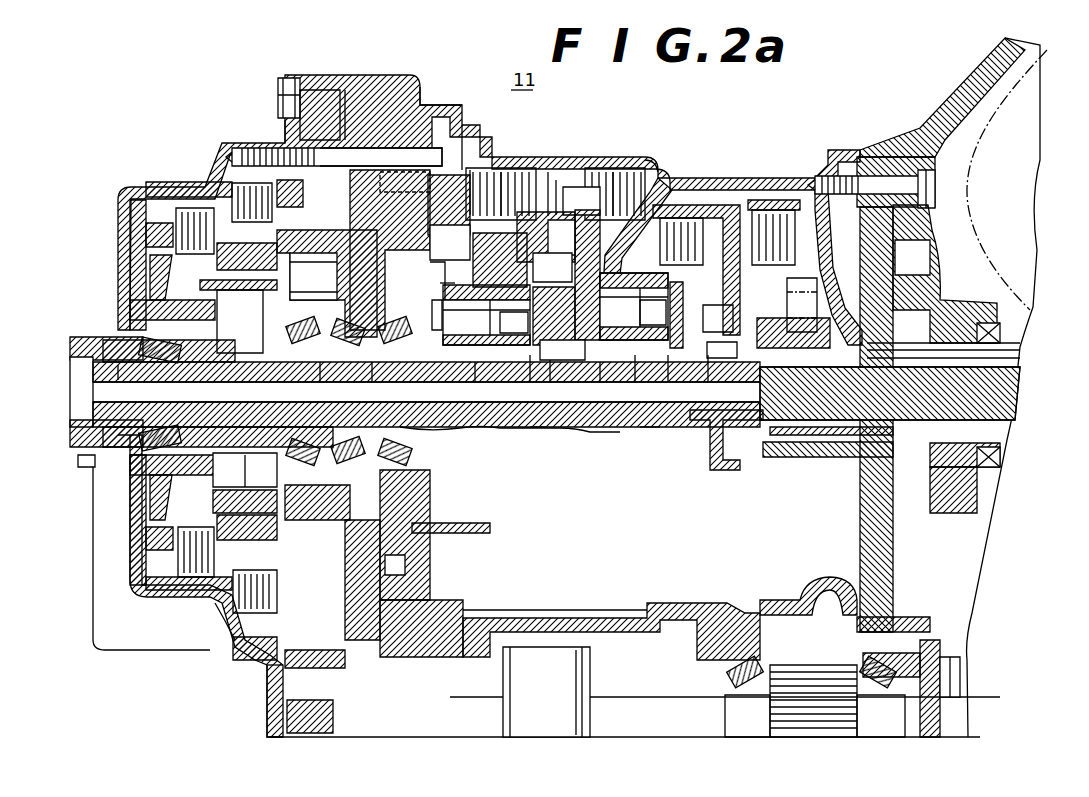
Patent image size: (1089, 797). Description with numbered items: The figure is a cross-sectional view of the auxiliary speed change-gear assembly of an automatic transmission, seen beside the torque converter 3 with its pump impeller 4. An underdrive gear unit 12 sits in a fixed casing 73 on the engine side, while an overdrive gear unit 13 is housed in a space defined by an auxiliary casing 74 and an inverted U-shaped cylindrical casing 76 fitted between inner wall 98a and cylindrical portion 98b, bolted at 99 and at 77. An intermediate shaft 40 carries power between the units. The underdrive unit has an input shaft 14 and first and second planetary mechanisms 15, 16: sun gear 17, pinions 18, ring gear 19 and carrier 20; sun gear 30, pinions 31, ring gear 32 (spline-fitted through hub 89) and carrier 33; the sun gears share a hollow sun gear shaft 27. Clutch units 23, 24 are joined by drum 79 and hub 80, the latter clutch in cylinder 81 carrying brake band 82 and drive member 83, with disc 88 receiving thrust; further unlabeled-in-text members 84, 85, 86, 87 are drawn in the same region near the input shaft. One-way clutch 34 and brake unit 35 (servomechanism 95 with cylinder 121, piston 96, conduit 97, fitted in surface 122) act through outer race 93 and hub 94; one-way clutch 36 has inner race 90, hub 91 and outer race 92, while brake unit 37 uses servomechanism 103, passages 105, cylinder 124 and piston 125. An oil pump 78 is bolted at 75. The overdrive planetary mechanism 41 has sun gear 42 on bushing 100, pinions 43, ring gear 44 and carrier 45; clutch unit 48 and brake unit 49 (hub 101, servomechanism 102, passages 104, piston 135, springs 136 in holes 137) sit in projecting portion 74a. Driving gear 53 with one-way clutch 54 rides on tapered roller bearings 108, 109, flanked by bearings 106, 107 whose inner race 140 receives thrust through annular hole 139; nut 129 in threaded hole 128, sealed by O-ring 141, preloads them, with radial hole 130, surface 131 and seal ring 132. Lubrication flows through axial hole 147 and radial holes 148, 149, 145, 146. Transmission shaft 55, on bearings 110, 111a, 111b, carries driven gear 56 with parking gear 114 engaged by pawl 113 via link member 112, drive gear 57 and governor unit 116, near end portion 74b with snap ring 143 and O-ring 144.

The torque converter 3 is at (943, 88).
The pump impeller 4 is at (1030, 145).
The underdrive gear unit 12 is at (682, 176).
The overdrive gear unit 13 is at (226, 128).
The input shaft 14 is at (900, 378).
The first planetary gear mechanism 15 is at (600, 265).
The second planetary gear mechanism 16 is at (460, 252).
The sun gear 17 is at (601, 374).
The planetary pinions 18 is at (634, 306).
The ring gear 19 is at (653, 312).
The carrier 20 is at (636, 372).
The clutch unit 23 is at (690, 215).
The clutch unit 24 is at (772, 210).
The sun gear shaft 27 is at (550, 370).
The sun gear 30 is at (475, 374).
The planetary pinions 31 is at (486, 322).
The ring gear 32 is at (440, 268).
The carrier 33 is at (513, 320).
The one-way clutch 34 is at (558, 343).
The brake unit 35 is at (614, 182).
The one-way clutch 36 is at (546, 237).
The brake unit 37 is at (449, 205).
The intermediate shaft 40 is at (572, 428).
The planetary gear mechanism 41 is at (208, 600).
The sun gear 42 is at (262, 428).
The planetary pinions 43 is at (203, 519).
The ring gear 44 is at (237, 282).
The carrier 45 is at (258, 471).
The clutch unit 48 is at (188, 208).
The brake unit 49 is at (226, 184).
The driving gear 53 is at (310, 222).
The one-way clutch 54 is at (313, 268).
The transmission shaft 55 is at (655, 700).
The driven gear 56 is at (346, 590).
The drive gear 57 is at (790, 668).
The fixed casing 73 is at (880, 155).
The auxiliary casing 74 is at (214, 172).
The projecting portion 74a is at (118, 563).
The axially outer end portion 74b is at (267, 717).
The bolt 75 is at (936, 186).
The cylindrical casing 76 is at (323, 140).
The bolt 77 is at (287, 78).
The oil pump 78 is at (930, 258).
The drum 79 is at (758, 316).
The hub 80 is at (800, 294).
The cylinder 81 is at (816, 254).
The brake band 82 is at (745, 200).
The drive member 83 is at (652, 185).
The shaft 84 is at (708, 370).
The shaft 85 is at (668, 370).
The bearing 86 is at (700, 350).
The ring 87 is at (686, 300).
The disc 88 is at (718, 317).
The hub 89 is at (438, 286).
The inner race 90 is at (552, 267).
The hub 91 is at (462, 252).
The outer race 92 is at (581, 200).
The outer race 93 is at (518, 302).
The hub 94 is at (565, 237).
The servomechanism 95 is at (552, 172).
The piston 96 is at (560, 180).
The oil conduit 97 is at (528, 178).
The inner wall 98a is at (290, 135).
The cylindrical portion 98b is at (358, 140).
The bolting points 99 is at (421, 93).
The bushing 100 is at (236, 376).
The cylindrical hub 101 is at (272, 235).
The servomechanism 102 is at (332, 172).
The servomechanism 103 is at (472, 170).
The oil passages 104 is at (352, 157).
The oil passages 105 is at (390, 250).
The tapered roller bearing 106 is at (168, 362).
The tapered roller bearing 107 is at (395, 348).
The tapered roller bearing 108 is at (348, 348).
The tapered roller bearing 109 is at (303, 348).
The bearing 110 is at (310, 716).
The bearing 111a is at (878, 692).
The bearing 111b is at (745, 692).
The transmission link member 112 is at (408, 563).
The pawl 113 is at (380, 535).
The parking gear 114 is at (418, 592).
The oil pressure governor unit 116 is at (582, 660).
The cylinder 121 is at (598, 170).
The inner peripheral surface 122 is at (513, 170).
The cylinder 124 is at (372, 178).
The piston 125 is at (466, 160).
The threaded hole 128 is at (120, 340).
The nut 129 is at (80, 345).
The radial hole 130 is at (86, 422).
The inner peripheral surface 131 is at (80, 365).
The seal ring 132 is at (118, 373).
The piston 135 is at (282, 582).
The return springs 136 is at (256, 656).
The holes 137 is at (215, 626).
The annular hole 139 is at (434, 314).
The inner race 140 is at (373, 374).
The O-ring 141 is at (84, 467).
The snap ring 143 is at (275, 676).
The O-ring 144 is at (330, 655).
The radial hole 145 is at (530, 372).
The radial hole 146 is at (553, 316).
The axial hole 147 is at (652, 420).
The radial hole 148 is at (320, 374).
The radial hole 149 is at (541, 420).